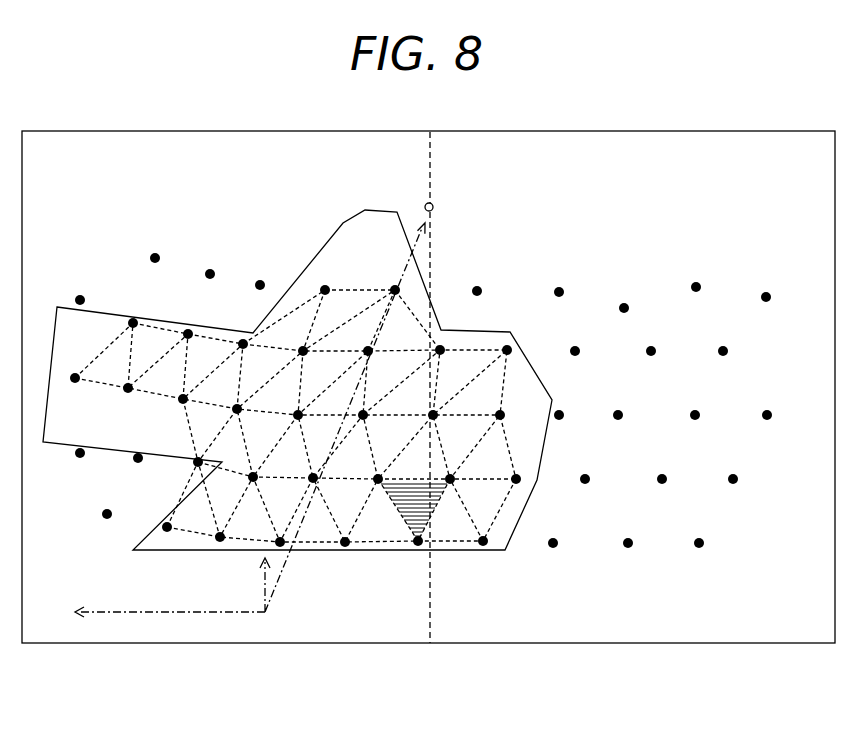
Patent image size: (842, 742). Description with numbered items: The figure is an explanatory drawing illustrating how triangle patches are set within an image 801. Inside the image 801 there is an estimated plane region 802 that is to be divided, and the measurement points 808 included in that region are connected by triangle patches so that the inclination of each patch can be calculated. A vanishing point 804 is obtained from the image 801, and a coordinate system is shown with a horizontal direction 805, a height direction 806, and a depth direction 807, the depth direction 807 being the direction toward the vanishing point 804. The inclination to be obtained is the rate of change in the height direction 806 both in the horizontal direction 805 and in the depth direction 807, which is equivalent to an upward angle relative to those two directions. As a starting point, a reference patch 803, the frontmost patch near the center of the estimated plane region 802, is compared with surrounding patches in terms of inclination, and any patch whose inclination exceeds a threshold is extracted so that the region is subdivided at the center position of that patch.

The image 801 is at (245, 645).
The estimated plane region 802 is at (323, 250).
The reference patch 803 is at (430, 518).
The vanishing point 804 is at (433, 198).
The horizontal direction 805 is at (173, 617).
The height direction 806 is at (270, 588).
The depth direction 807 is at (290, 553).
The measurement points 808 is at (703, 548).